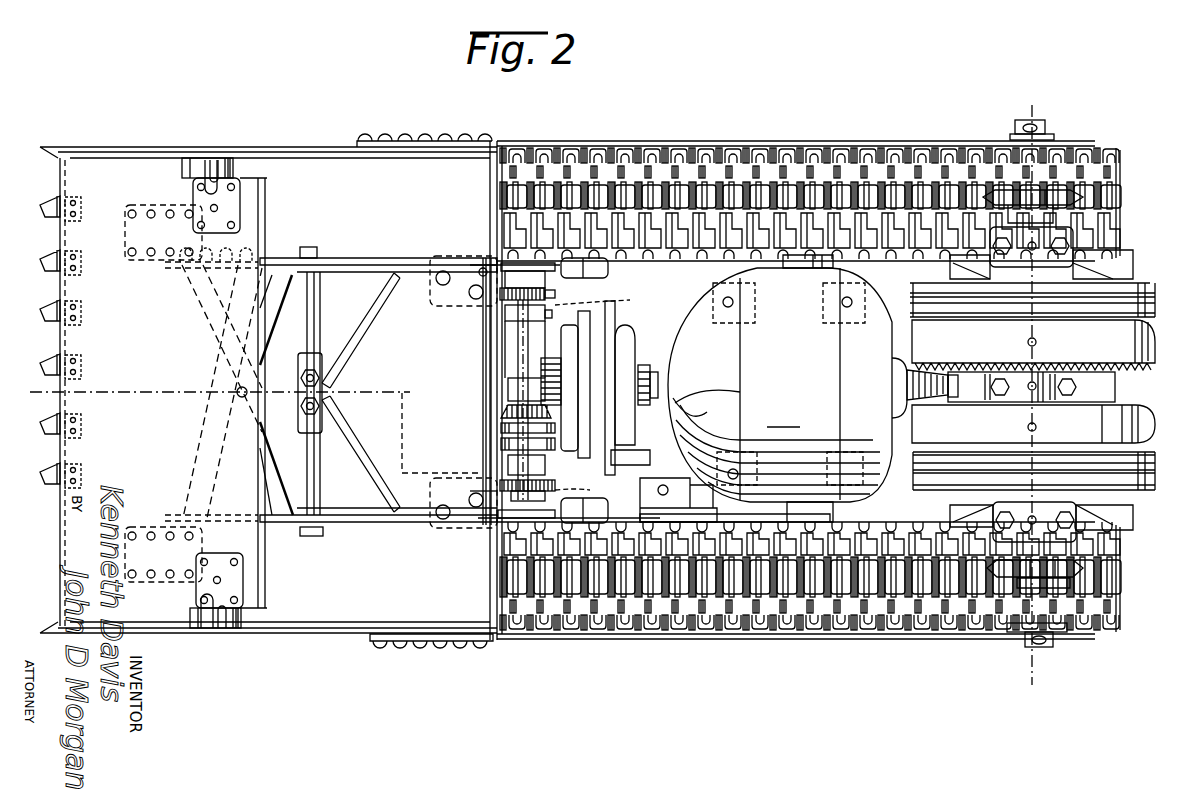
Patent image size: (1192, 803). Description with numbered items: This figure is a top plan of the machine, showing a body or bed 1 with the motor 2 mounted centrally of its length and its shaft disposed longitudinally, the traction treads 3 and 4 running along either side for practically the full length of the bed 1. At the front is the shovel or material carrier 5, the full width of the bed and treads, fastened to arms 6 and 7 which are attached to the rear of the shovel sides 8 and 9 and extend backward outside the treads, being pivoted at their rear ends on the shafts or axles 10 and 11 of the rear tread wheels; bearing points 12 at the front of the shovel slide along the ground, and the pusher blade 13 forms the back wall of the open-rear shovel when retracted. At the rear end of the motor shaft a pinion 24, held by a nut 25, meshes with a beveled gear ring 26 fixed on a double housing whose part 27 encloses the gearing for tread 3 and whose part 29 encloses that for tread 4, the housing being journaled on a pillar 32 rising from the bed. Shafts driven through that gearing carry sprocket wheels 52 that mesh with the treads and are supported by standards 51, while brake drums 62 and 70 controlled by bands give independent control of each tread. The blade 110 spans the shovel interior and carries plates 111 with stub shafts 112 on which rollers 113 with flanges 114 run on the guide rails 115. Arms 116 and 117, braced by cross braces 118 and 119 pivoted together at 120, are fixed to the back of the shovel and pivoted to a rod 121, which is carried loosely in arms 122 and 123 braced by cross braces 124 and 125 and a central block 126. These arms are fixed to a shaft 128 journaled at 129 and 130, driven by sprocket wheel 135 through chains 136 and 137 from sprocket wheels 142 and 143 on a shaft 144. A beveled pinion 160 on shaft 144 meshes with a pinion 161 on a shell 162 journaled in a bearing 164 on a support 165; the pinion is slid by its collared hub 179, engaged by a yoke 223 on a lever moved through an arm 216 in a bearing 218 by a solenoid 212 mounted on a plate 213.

The body or bed 1 is at (688, 280).
The motor 2 is at (780, 318).
The traction tread 3 is at (1040, 113).
The traction tread 4 is at (450, 385).
The shovel or material carrier 5 is at (385, 600).
The arm 6 is at (760, 143).
The arm 7 is at (33, 404).
The side of shovel 8 is at (310, 150).
The side of shovel 9 is at (303, 640).
The shaft or axle 10 is at (1047, 126).
The shaft or axle 11 is at (1055, 645).
The bearing points 12 is at (42, 318).
The pusher blade 13 is at (103, 185).
The pinion 24 is at (905, 383).
The nut 25 is at (953, 397).
The beveled gear ring 26 is at (1125, 380).
The housing part 27 is at (1145, 345).
The housing part 29 is at (1130, 428).
The pillar 32 is at (1045, 390).
The standard 51 is at (1095, 262).
The sprocket wheel 52 is at (1062, 190).
The brake drum 62 is at (1140, 290).
The brake drum 70 is at (1145, 312).
The blade 110 is at (255, 233).
The plates 111 is at (238, 203).
The stub shafts 112 is at (235, 185).
The rollers 113 is at (238, 170).
The flanges 114 is at (215, 172).
The guide rails or trackways 115 is at (350, 160).
The arm 116 is at (290, 252).
The arm 117 is at (275, 538).
The cross brace 118 is at (208, 340).
The cross brace 119 is at (208, 455).
The pivot 120 is at (238, 396).
The rod 121 is at (312, 300).
The arm 122 is at (405, 262).
The arm 123 is at (408, 525).
The cross brace 124 is at (350, 307).
The cross brace 125 is at (345, 430).
The central block 126 is at (322, 385).
The shaft 128 is at (490, 275).
The journal support or standard 129 is at (505, 318).
The journal support or bearing block 130 is at (518, 466).
The sprocket wheel 135 is at (592, 490).
The sprocket chain 136 is at (560, 294).
The sprocket chain 137 is at (468, 492).
The sprocket wheel 142 is at (540, 290).
The sprocket wheel 143 is at (528, 505).
The shaft 144 is at (525, 355).
The beveled pinion 160 is at (520, 412).
The pinion 161 is at (575, 350).
The shell 162 is at (620, 365).
The bearing 164 is at (521, 358).
The support 165 is at (518, 398).
The collared hub 179 is at (520, 437).
The solenoid 212 is at (680, 428).
The plate 213 is at (715, 514).
The arm 216 is at (700, 405).
The bearing 218 is at (635, 445).
The yoke 223 is at (520, 448).